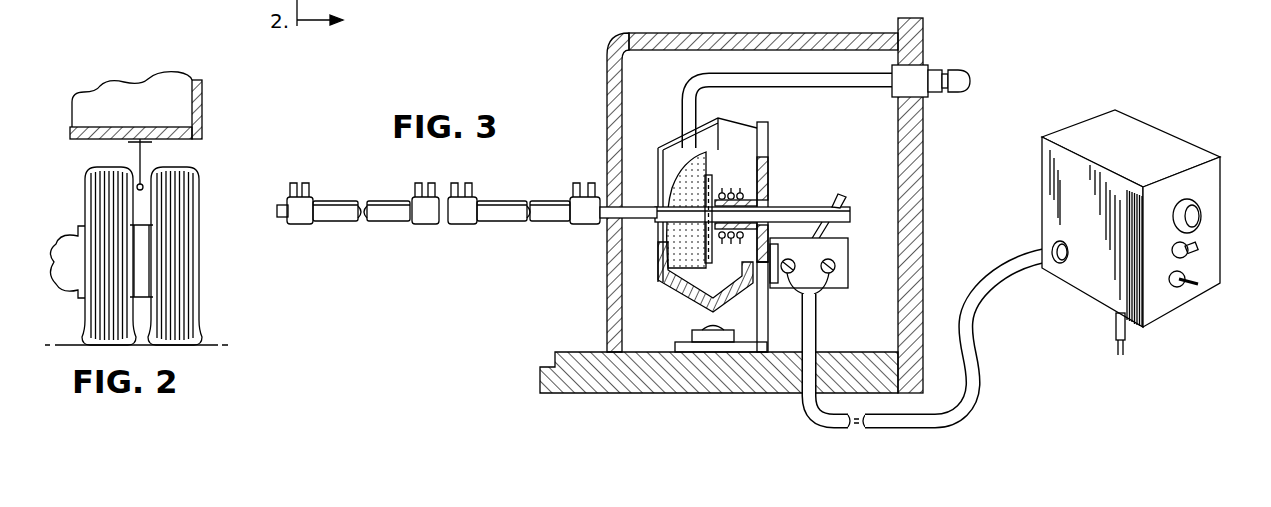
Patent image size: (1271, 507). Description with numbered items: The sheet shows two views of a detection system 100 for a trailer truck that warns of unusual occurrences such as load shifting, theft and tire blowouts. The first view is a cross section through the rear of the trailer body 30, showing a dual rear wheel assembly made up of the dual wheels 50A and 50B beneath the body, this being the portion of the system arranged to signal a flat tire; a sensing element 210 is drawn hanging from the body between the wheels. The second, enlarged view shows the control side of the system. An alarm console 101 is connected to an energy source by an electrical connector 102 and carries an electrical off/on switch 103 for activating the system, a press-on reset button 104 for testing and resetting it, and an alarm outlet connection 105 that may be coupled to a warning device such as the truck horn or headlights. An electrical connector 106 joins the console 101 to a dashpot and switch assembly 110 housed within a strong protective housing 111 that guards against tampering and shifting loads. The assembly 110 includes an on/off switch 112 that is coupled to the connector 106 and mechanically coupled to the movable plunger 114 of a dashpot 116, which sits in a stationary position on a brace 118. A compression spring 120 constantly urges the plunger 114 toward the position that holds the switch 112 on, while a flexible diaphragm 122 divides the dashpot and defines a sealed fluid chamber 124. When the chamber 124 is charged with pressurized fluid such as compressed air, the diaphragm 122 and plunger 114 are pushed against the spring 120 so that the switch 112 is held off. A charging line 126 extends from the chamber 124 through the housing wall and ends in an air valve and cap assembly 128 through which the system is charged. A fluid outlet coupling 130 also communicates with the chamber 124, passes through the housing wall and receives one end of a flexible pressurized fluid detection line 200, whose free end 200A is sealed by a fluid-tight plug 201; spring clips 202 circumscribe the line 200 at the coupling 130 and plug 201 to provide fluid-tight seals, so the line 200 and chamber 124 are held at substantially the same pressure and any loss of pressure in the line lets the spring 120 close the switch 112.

In FIG. 2, the trailer body 30 is at (205, 92).
In FIG. 2, the dual wheel 50A is at (185, 185).
In FIG. 2, the dual wheel 50B is at (90, 192).
In FIG. 2, the sensing probe 210 is at (138, 192).
In FIG. 3, the sensing probe 210 is at (442, 224).
In FIG. 3, the detection system 100 is at (596, 58).
In FIG. 3, the alarm console 101 is at (1145, 132).
In FIG. 3, the electrical connector 102 is at (1125, 330).
In FIG. 3, the off/on switch 103 is at (1190, 283).
In FIG. 3, the reset button 104 is at (1190, 250).
In FIG. 3, the alarm outlet connection 105 is at (1200, 210).
In FIG. 3, the electrical connector 106 is at (1010, 258).
In FIG. 3, the dashpot and switch assembly 110 is at (790, 158).
In FIG. 3, the protective housing 111 is at (695, 32).
In FIG. 3, the on/off switch 112 is at (838, 197).
In FIG. 3, the plunger 114 is at (780, 215).
In FIG. 3, the dashpot 116 is at (746, 127).
In FIG. 3, the brace 118 is at (760, 325).
In FIG. 3, the compression spring 120 is at (735, 186).
In FIG. 3, the flexible diaphragm 122 is at (688, 293).
In FIG. 3, the sealed fluid chamber 124 is at (690, 165).
In FIG. 3, the charging line 126 is at (783, 77).
In FIG. 3, the air valve and cap assembly 128 is at (960, 80).
In FIG. 3, the fluid outlet coupling 130 is at (635, 210).
In FIG. 3, the pressurized fluid detection line 200 is at (383, 207).
In FIG. 3, the free end 200A is at (285, 224).
In FIG. 3, the fluid-tight plug 201 is at (277, 212).
In FIG. 3, the spring clips 202 is at (306, 224).